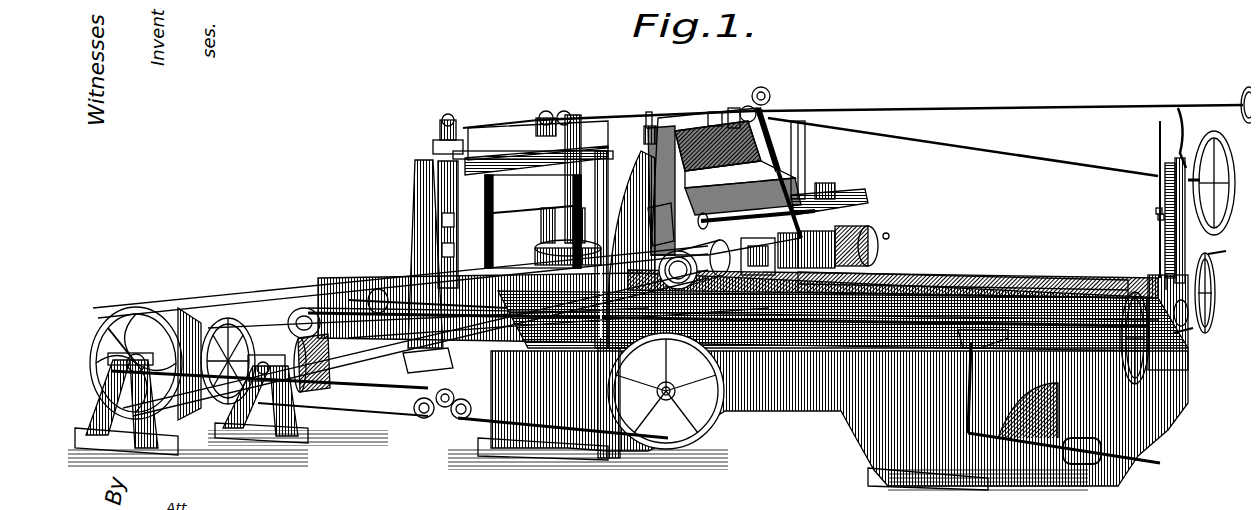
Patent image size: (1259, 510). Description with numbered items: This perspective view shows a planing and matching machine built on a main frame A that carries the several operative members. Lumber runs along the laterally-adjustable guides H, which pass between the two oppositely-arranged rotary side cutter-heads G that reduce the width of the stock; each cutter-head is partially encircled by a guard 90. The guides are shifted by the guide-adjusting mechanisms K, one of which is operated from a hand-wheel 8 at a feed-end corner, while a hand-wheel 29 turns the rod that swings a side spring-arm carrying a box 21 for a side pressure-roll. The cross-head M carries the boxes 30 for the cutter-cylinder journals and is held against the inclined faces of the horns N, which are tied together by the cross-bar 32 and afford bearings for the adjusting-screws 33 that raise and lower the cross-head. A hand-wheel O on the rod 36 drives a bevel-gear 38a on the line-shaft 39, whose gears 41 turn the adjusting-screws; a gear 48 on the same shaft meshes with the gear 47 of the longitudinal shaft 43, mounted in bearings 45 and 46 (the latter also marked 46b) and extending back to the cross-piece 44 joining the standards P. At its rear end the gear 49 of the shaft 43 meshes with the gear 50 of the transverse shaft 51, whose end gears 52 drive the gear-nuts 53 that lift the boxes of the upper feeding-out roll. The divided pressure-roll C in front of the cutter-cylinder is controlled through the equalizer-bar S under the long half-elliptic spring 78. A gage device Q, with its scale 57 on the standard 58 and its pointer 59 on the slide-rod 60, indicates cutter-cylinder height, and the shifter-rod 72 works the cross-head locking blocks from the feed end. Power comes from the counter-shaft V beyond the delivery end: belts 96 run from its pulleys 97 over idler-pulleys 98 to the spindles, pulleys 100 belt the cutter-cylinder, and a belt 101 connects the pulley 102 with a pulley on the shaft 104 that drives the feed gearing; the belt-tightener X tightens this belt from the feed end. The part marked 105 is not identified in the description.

The main frame A is at (839, 388).
The standards P is at (502, 234).
The rotary side cutter-heads G is at (515, 203).
The cross-piece 44 is at (500, 150).
The bearing 46 is at (570, 135).
The transverse rotary shaft 51 is at (500, 117).
The longitudinal shaft 43 is at (600, 108).
The bevel-gears 52 is at (439, 122).
The bevel gear-nuts 53 is at (430, 135).
The bevel-gear 50 is at (542, 115).
The bevel-gear 49 is at (563, 110).
The frames or guards 90 is at (687, 264).
The standards or horns N is at (626, 165).
The cross plate or bar 32 is at (724, 181).
The boxes 30 is at (705, 190).
The cross-head M is at (661, 224).
The adjusting-screws 33 is at (636, 135).
The bevel-gears 41 is at (641, 106).
The line-shaft 39 is at (706, 106).
The bevel-gear 47 is at (727, 106).
The bevel-gear 48 is at (745, 101).
The bevel-gear 38a is at (765, 89).
The long half-elliptic spring 78 is at (830, 186).
The equalizer-bar S is at (848, 205).
The bearing 45 is at (815, 250).
The roller support 46b is at (858, 220).
The divided pressure-roll C is at (888, 238).
The shifter-rod 72 is at (1002, 105).
The rod 36 is at (963, 147).
The slide-rod 60 is at (1148, 199).
The scale 57 is at (1157, 236).
The standard 58 is at (1168, 250).
The pointer or index-finger 59 is at (1150, 202).
The gage device Q is at (1147, 215).
The hand-wheel O is at (1213, 171).
The boxes or bearings 21 is at (1205, 262).
The guide-adjusting mechanisms K is at (1120, 385).
The hand-wheel 29 is at (1182, 324).
The crank or hand-wheel 8 is at (1118, 372).
The laterally-adjustable guides H is at (905, 266).
The shaft 104 is at (661, 395).
The flywheel hub 105 is at (678, 408).
The pulley 102 is at (145, 363).
The pulleys 97 is at (228, 361).
The counter-shaft V is at (105, 385).
The idler-pulleys 98 is at (365, 352).
The belts 96 is at (398, 313).
The pulleys 100 is at (325, 375).
The belt 101 is at (455, 415).
The belt-tightener X is at (421, 394).